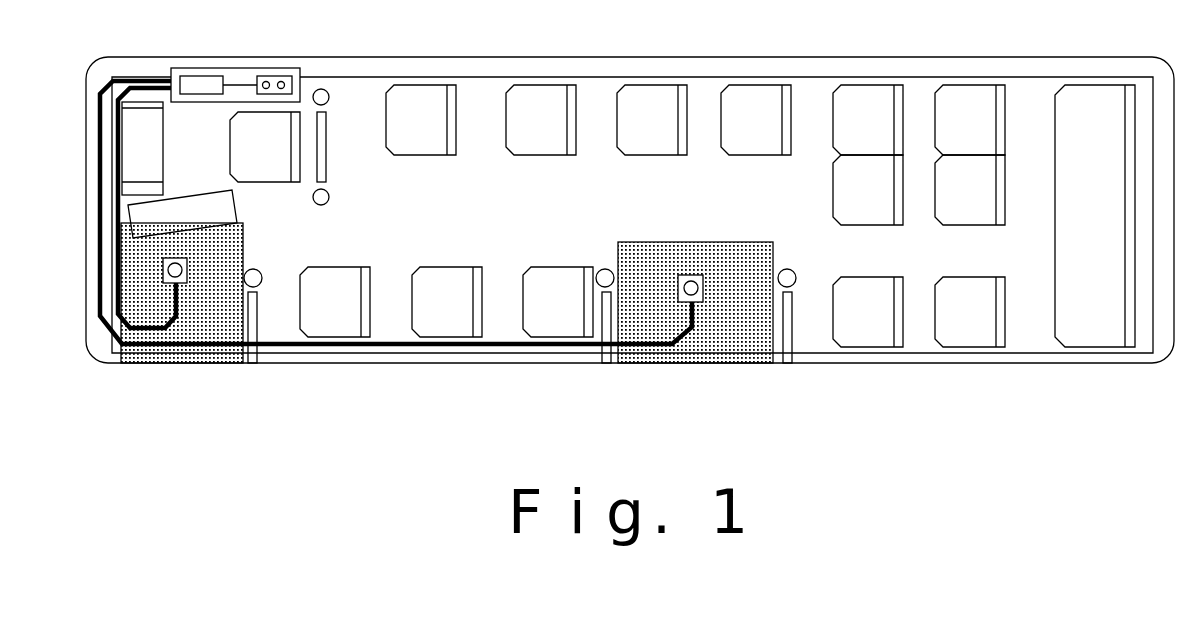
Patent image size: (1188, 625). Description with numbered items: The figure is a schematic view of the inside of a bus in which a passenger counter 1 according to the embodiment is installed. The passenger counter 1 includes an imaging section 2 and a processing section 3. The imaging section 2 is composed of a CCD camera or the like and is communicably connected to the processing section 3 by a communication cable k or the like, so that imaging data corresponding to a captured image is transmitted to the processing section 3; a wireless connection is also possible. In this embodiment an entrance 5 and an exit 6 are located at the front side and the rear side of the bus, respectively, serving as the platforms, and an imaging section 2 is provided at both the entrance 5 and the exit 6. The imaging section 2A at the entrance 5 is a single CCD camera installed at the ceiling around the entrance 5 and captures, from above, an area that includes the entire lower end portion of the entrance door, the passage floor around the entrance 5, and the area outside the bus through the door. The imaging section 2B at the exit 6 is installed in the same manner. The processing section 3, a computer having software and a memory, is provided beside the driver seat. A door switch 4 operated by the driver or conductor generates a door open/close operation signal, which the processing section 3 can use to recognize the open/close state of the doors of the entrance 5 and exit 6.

The passenger counter 1 is at (208, 70).
The processing section 3 is at (193, 76).
The door switch 4 is at (282, 76).
The cables k is at (100, 267).
The exit 6 is at (193, 362).
The entrance 5 is at (720, 362).
The imaging section 2 is at (433, 252).
The imaging section 2A is at (690, 280).
The imaging section 2B is at (187, 268).